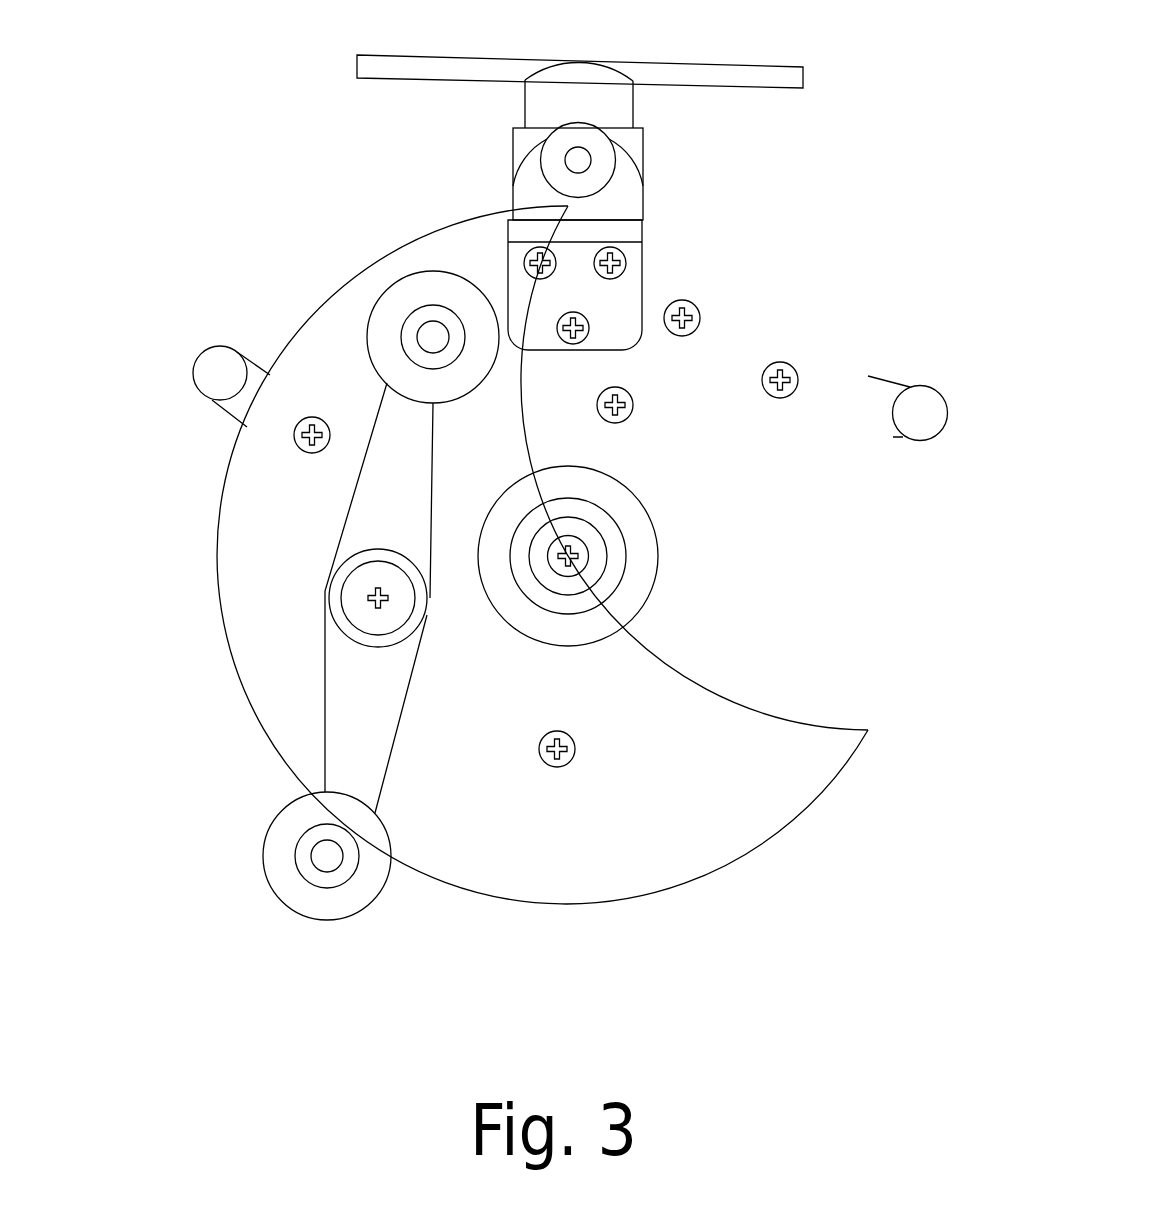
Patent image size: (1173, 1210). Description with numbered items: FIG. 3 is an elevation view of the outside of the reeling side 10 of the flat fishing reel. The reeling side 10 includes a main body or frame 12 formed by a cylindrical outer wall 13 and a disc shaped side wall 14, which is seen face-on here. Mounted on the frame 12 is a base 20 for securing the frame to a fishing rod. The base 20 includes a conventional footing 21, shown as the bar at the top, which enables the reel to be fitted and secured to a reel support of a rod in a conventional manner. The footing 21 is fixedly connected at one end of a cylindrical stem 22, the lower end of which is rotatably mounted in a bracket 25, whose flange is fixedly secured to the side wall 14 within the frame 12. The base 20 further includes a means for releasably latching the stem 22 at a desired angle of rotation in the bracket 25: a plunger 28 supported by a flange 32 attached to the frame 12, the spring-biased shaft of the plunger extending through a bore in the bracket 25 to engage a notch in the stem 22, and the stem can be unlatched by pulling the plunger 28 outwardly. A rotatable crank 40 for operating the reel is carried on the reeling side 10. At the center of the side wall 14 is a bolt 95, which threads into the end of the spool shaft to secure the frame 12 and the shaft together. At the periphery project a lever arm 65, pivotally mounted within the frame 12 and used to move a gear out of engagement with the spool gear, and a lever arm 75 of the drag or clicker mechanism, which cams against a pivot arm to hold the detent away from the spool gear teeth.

The reeling side 10 is at (907, 293).
The main body or frame 12 is at (793, 288).
The cylindrical outer wall 13 is at (847, 768).
The disc shaped side wall 14 is at (735, 831).
The base 20 is at (569, 176).
The footing 21 is at (715, 68).
The cylindrical stem 22 is at (528, 102).
The bracket 25 is at (643, 145).
The plunger 28 is at (583, 128).
The flange 32 is at (627, 198).
The rotatable crank 40 is at (377, 505).
The lever arm 65 is at (208, 363).
The lever arm 75 is at (930, 420).
The bolt 95 is at (583, 550).